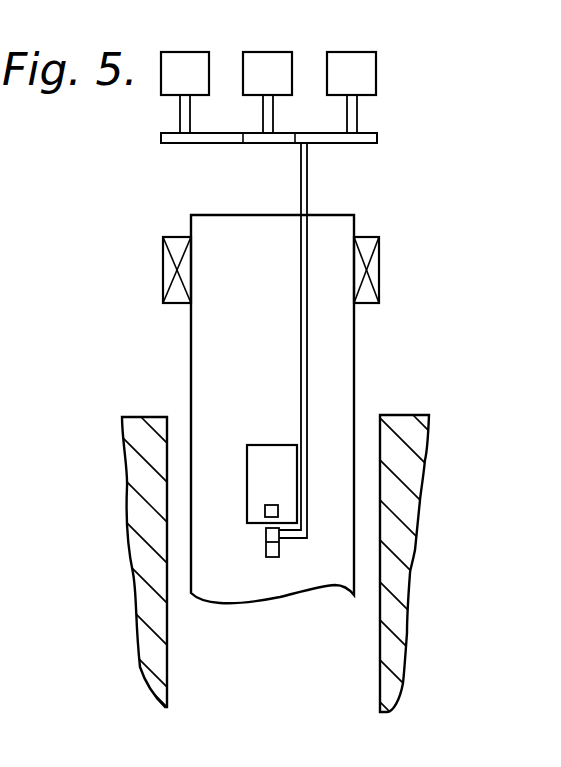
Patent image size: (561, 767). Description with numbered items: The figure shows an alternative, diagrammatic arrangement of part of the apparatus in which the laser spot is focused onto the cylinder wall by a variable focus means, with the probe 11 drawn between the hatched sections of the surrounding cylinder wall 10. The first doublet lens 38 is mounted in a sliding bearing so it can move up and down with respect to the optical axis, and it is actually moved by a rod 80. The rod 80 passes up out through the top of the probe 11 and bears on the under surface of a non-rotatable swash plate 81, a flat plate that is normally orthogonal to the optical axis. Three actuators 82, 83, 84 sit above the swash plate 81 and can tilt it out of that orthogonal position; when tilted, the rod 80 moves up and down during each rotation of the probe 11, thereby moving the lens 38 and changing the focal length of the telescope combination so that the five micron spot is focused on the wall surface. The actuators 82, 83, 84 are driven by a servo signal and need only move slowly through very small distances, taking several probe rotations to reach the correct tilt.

The borehole wall 10 is at (404, 640).
The probe 11 is at (356, 357).
The first doublet lens 38 is at (272, 557).
The rod 80 is at (308, 398).
The swash plate 81 is at (373, 142).
The actuator 82 is at (356, 57).
The actuator 83 is at (266, 59).
The actuator 84 is at (182, 63).